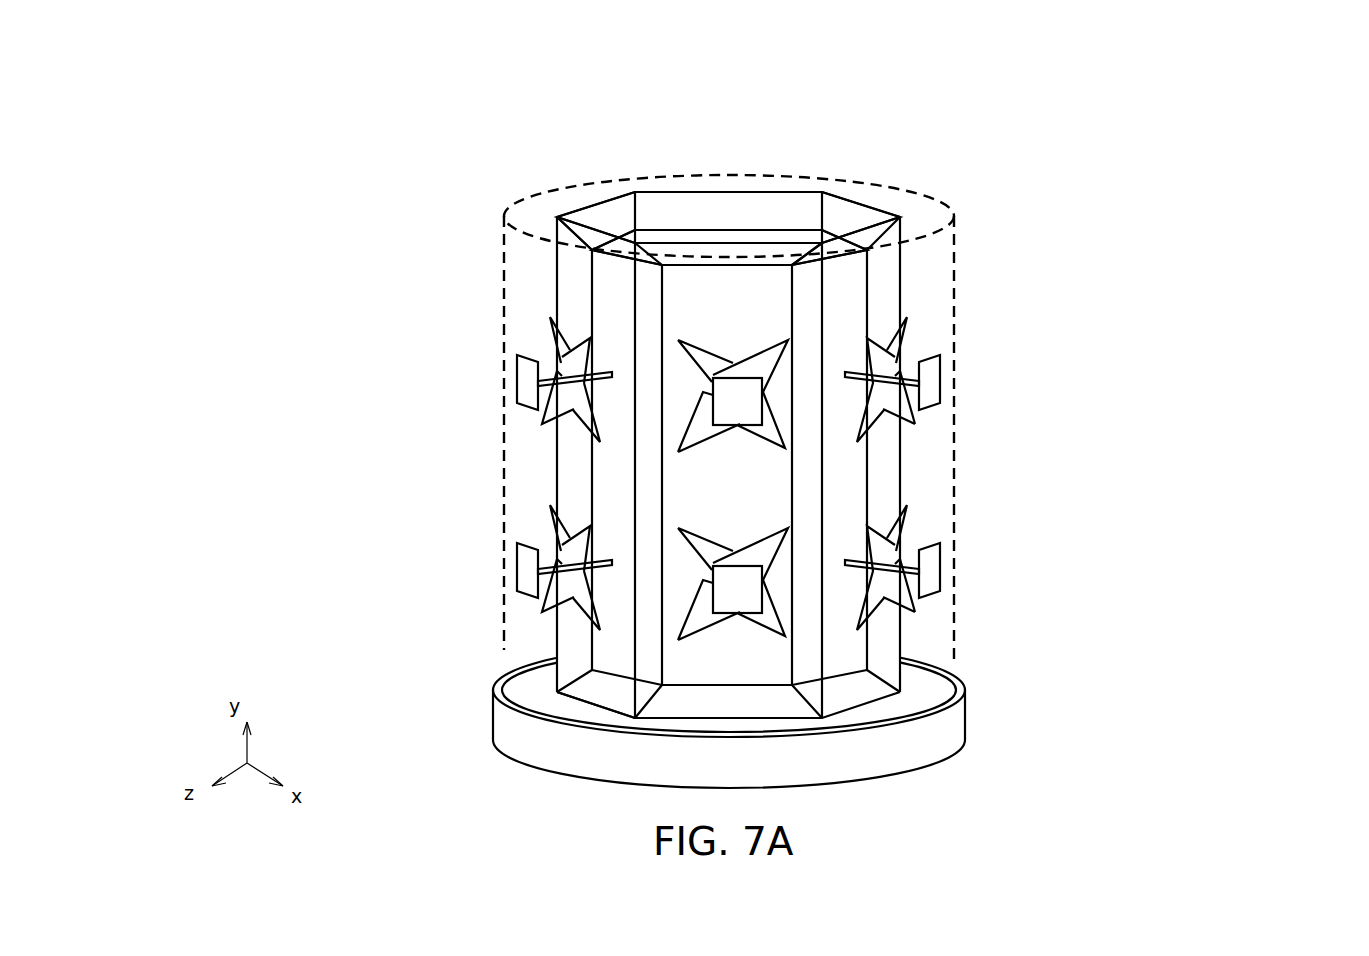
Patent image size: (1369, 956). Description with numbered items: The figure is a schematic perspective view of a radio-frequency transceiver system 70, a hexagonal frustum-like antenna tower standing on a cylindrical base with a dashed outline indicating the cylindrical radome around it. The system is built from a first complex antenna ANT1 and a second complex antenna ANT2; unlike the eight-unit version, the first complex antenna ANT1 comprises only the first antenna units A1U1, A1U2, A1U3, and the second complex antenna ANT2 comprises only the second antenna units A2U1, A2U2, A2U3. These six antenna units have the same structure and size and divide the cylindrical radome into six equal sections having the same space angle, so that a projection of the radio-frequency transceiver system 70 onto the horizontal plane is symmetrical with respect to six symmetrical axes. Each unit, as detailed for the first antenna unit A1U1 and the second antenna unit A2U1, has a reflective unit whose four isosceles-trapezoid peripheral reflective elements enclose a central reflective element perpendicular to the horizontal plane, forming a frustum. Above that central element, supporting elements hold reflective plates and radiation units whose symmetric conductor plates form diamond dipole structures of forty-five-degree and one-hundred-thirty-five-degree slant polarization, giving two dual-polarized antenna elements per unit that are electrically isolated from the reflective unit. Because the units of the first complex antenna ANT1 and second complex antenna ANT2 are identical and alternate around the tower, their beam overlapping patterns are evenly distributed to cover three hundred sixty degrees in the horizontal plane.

The radio-frequency transceiver system 70 is at (1199, 97).
The first complex antenna ANT1 is at (1195, 145).
The second complex antenna ANT2 is at (236, 606).
The first antenna unit A1U1 is at (1119, 238).
The first antenna unit A1U2 is at (603, 205).
The first antenna unit A1U3 is at (867, 202).
The second antenna unit A2U1 is at (308, 216).
The second antenna unit A2U2 is at (653, 189).
The second antenna unit A2U3 is at (857, 228).